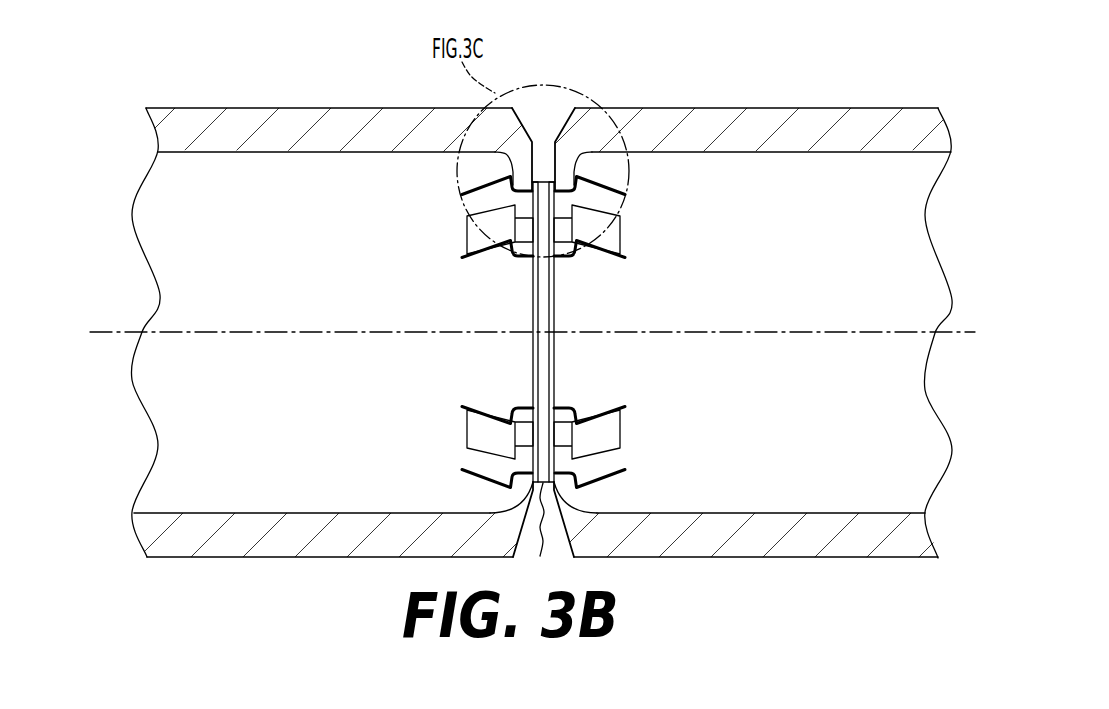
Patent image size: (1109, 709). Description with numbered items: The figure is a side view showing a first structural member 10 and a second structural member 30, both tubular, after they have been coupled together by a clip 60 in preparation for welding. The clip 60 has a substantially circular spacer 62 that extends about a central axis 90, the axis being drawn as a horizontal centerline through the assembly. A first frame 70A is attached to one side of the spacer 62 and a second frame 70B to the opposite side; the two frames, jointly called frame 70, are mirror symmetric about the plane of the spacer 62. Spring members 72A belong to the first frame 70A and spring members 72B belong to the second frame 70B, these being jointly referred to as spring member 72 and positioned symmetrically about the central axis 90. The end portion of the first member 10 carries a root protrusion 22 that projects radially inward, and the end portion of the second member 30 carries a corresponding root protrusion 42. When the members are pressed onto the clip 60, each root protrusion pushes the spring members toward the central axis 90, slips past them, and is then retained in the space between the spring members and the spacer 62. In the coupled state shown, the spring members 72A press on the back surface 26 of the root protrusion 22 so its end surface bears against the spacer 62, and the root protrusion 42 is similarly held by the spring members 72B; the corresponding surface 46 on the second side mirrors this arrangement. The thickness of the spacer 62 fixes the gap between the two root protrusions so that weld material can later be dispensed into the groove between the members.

The first structural member 10 is at (243, 313).
The second structural member 30 is at (870, 313).
The root protrusion 22 is at (525, 166).
The root protrusion 42 is at (565, 163).
The back surface 26 is at (462, 190).
The second flange lip / retaining band 46 is at (624, 190).
The clip 60 is at (510, 331).
The spacer 62 is at (543, 384).
The frame 70 is at (476, 410).
The first frame 70A is at (532, 382).
The second frame 70B is at (554, 380).
The spring member 72 is at (480, 250).
The spring members 72A is at (493, 241).
The spring members 72B is at (617, 236).
The central axis 90 is at (115, 335).